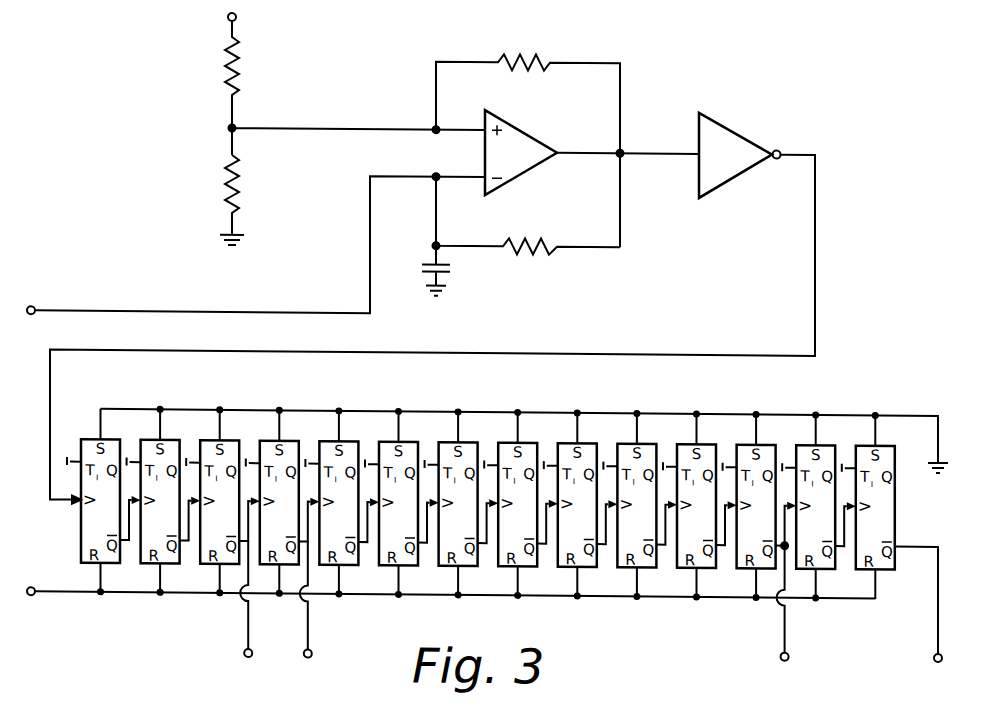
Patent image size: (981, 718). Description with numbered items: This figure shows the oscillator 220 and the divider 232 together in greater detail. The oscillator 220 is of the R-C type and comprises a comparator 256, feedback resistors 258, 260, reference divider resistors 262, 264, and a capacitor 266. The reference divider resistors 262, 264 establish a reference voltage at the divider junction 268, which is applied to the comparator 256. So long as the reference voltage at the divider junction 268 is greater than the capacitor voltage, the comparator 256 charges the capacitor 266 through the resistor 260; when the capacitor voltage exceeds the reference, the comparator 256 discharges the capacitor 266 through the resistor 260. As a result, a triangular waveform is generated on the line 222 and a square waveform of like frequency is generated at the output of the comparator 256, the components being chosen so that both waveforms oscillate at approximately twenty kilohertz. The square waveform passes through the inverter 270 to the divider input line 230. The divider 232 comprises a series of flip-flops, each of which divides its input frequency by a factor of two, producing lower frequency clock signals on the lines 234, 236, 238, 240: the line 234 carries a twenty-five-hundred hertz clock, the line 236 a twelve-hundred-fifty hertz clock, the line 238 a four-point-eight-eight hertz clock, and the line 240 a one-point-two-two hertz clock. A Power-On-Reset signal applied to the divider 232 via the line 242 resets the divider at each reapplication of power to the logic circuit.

The oscillator 220 is at (700, 45).
The line 222 is at (120, 308).
The line 230 is at (815, 223).
The divider 232 is at (572, 392).
The line 234 is at (248, 638).
The line 236 is at (308, 636).
The line 238 is at (784, 628).
The line 240 is at (938, 619).
The line 242 is at (90, 593).
The comparator 256 is at (525, 143).
The feedback resistor 258 is at (535, 52).
The feedback resistor 260 is at (545, 250).
The reference divider resistor 262 is at (240, 75).
The reference divider resistor 264 is at (240, 188).
The capacitor 266 is at (446, 270).
The divider junction 268 is at (232, 126).
The inverter 270 is at (725, 146).